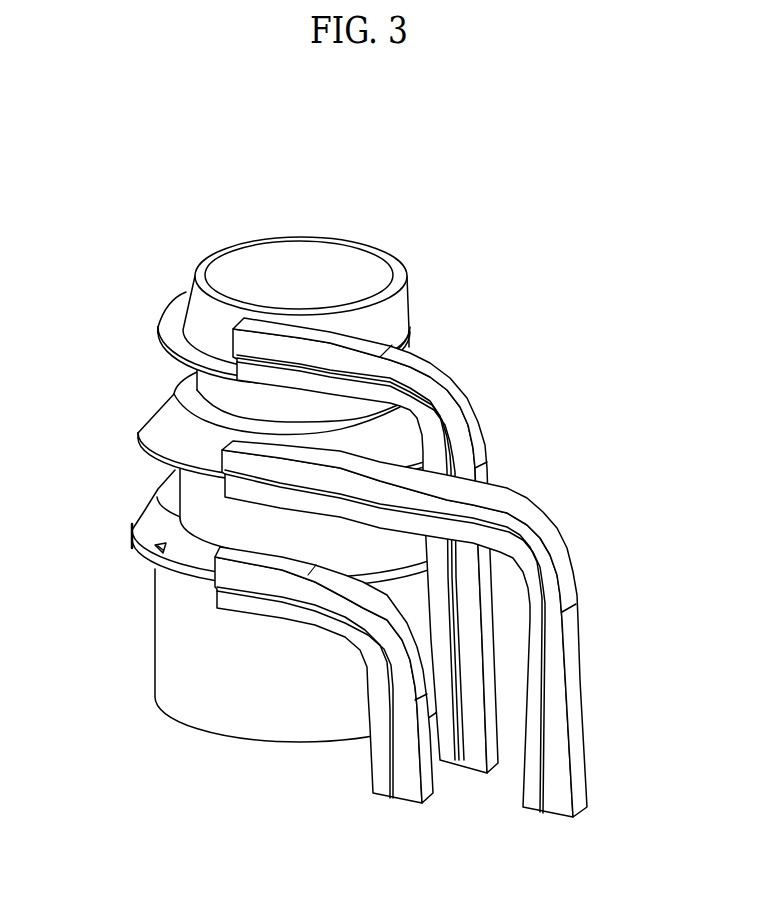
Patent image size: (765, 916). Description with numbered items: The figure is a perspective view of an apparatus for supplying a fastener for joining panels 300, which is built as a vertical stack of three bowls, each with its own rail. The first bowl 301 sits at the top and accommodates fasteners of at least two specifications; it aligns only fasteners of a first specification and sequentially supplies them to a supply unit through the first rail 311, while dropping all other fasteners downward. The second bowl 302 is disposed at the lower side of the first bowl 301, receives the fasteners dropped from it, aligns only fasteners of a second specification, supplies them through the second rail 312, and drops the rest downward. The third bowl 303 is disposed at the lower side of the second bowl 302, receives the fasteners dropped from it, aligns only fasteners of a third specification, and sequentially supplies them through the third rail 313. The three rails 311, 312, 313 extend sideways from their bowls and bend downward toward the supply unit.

The apparatus for supplying a fastener for joining panels 300 is at (318, 154).
The first bowl 301 is at (210, 382).
The second bowl 302 is at (210, 490).
The third bowl 303 is at (210, 633).
The first rail 311 is at (458, 397).
The second rail 312 is at (520, 510).
The third rail 313 is at (378, 760).